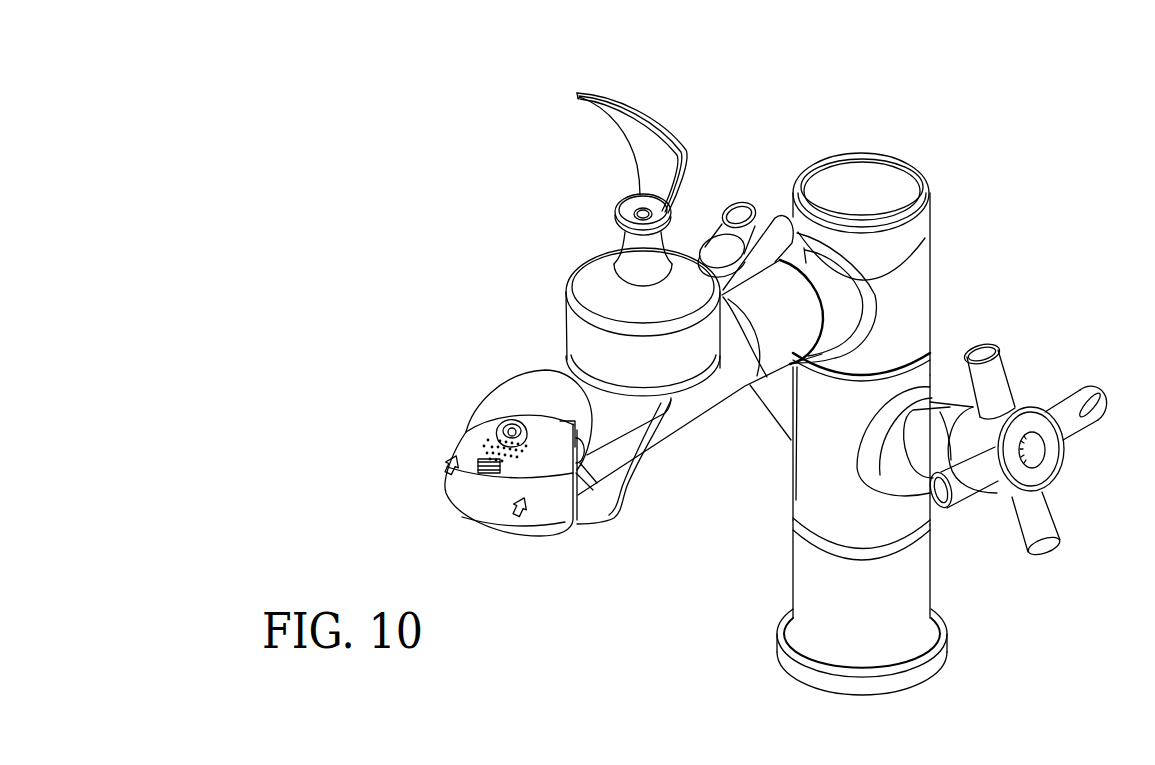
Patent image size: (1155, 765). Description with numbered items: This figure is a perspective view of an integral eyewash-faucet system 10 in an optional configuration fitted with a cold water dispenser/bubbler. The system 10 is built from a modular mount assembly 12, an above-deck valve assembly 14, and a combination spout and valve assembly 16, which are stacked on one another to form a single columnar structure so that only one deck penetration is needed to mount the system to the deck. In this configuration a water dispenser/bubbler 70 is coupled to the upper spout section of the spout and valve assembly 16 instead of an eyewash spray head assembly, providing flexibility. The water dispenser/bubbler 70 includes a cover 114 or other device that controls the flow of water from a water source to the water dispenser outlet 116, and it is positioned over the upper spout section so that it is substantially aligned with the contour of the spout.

The integral eyewash-faucet system 10 is at (989, 605).
The modular mount assembly 12 is at (762, 608).
The above-deck valve assembly 14 is at (771, 499).
The combination spout and valve assembly 16 is at (992, 207).
The water dispenser/bubbler 70 is at (619, 286).
The cover 114 is at (617, 130).
The water dispenser outlet 116 is at (634, 206).